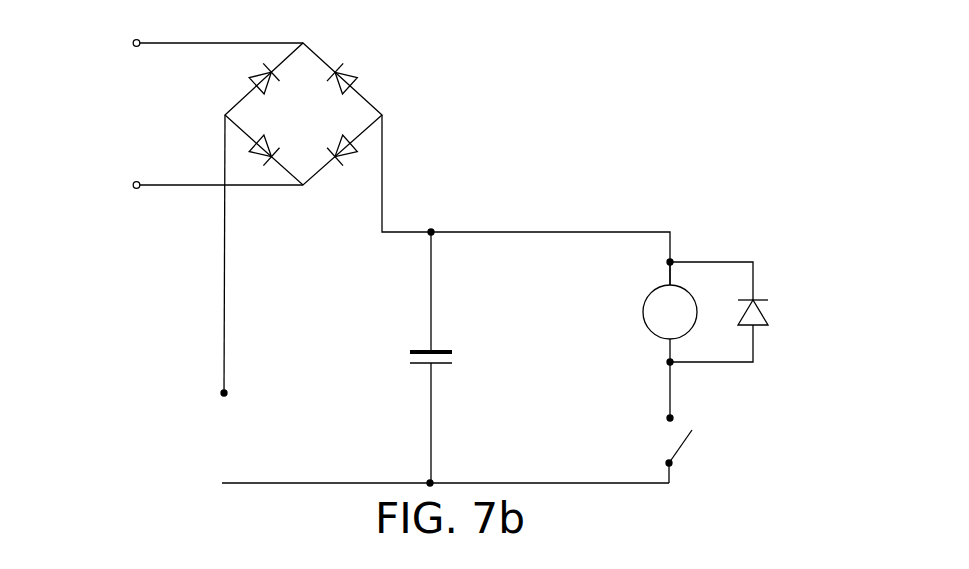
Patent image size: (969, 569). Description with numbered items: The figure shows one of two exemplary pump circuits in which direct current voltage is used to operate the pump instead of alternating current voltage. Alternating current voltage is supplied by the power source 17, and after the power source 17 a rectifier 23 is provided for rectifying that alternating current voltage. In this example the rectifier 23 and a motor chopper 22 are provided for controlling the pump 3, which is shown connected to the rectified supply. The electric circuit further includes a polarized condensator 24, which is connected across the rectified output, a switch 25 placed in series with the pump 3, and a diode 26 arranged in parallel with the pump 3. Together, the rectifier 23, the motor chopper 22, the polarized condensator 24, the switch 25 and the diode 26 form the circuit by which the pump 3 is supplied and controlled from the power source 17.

The pump 3 is at (643, 311).
The power source 17 is at (133, 44).
The motor chopper 22 is at (610, 163).
The rectifier 23 is at (319, 58).
The polarized condensator 24 is at (408, 357).
The switch 25 is at (688, 437).
The diode 26 is at (777, 308).